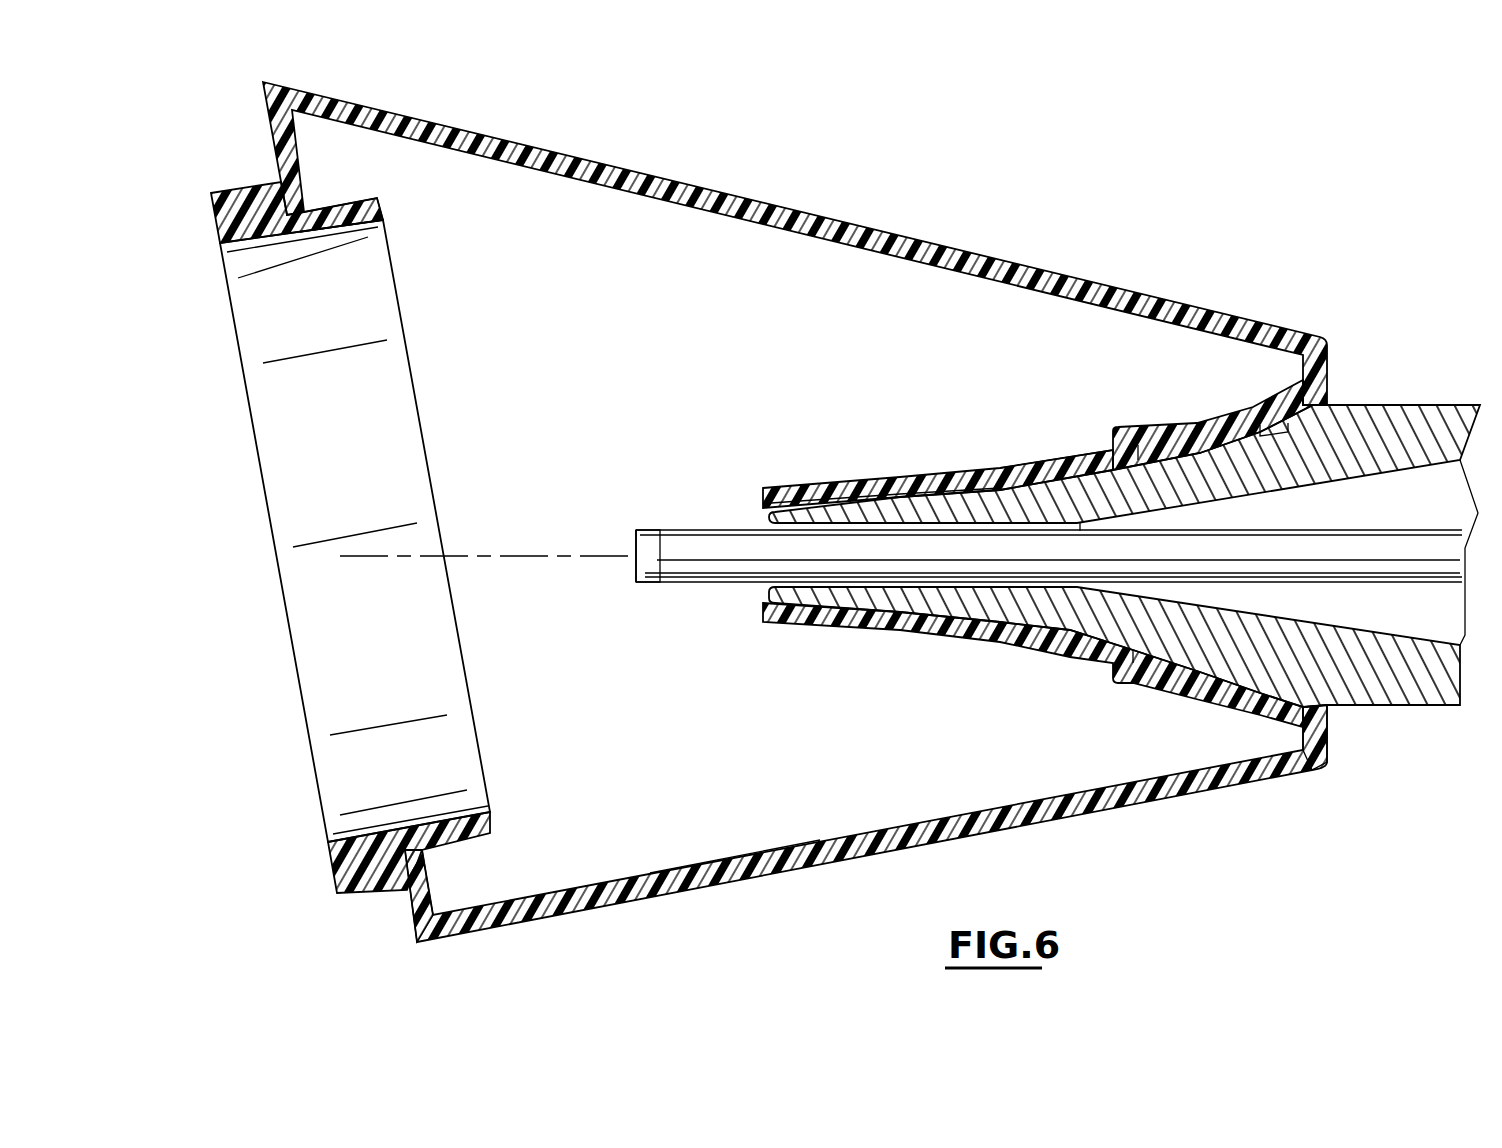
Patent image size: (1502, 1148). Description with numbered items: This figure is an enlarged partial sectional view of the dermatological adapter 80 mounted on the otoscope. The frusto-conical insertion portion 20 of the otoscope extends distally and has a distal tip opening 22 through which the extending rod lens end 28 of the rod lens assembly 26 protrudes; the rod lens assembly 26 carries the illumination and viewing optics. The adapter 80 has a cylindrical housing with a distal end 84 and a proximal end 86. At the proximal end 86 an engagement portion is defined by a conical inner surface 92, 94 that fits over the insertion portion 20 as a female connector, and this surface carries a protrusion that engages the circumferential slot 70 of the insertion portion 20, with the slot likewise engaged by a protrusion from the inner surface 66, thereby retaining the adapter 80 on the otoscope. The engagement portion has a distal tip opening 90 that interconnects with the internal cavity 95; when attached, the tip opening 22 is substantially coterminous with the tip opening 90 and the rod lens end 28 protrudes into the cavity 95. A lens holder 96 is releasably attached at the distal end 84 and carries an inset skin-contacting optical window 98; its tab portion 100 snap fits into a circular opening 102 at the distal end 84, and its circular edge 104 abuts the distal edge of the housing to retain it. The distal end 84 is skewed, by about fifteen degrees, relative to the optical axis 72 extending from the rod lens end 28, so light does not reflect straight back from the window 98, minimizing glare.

The frusto-conical insertion portion 20 is at (1210, 654).
The distal tip opening 22 is at (767, 588).
The rod lens assembly 26 is at (1193, 540).
The extending rod lens end 28 is at (673, 586).
The inner surface 66 is at (880, 503).
The circumferential slot 70 is at (1268, 409).
The optical axis 72 is at (488, 556).
The dermatological adapter 80 is at (1133, 806).
The distal end 84 is at (272, 134).
The proximal end 86 is at (1325, 775).
The distal tip opening 90 is at (760, 514).
The conical inner surface 92 is at (853, 480).
The conical inner surface 94 is at (1051, 454).
The cavity 95 is at (733, 840).
The lens holder 96 is at (371, 893).
The optical window 98 is at (322, 612).
The tab portion 100 is at (340, 198).
The circular opening 102 is at (374, 850).
The circular edge 104 is at (237, 187).